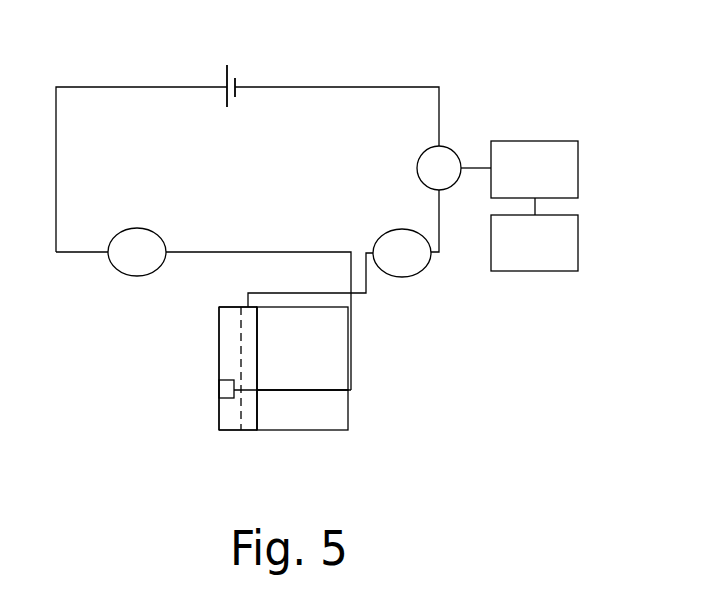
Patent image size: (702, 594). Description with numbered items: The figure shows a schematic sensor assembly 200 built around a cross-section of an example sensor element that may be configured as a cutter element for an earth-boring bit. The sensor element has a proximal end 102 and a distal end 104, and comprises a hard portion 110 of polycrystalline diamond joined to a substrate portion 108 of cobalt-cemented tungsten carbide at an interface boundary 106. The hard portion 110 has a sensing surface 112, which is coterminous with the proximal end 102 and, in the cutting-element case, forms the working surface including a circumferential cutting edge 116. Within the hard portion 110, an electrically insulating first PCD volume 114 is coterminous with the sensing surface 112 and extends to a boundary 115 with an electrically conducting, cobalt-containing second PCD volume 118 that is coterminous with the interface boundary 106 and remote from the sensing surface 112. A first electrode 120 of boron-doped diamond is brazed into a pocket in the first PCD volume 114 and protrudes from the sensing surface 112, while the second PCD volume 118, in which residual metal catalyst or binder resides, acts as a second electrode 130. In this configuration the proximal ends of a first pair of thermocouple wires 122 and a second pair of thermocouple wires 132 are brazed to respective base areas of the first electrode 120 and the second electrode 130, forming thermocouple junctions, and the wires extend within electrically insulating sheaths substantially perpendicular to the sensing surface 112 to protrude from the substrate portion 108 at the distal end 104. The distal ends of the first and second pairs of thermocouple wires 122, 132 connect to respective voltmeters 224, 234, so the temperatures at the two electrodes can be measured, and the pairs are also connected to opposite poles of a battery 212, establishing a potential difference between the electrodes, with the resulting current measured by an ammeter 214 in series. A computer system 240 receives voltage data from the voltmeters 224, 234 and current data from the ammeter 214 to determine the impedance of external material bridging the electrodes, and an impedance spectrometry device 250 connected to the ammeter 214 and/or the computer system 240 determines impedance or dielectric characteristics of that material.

The sensor assembly 200 is at (484, 83).
The battery 212 is at (222, 100).
The ammeter 214 is at (447, 150).
The computer system 240 is at (534, 178).
The impedance spectrometry device 250 is at (534, 243).
The voltmeter 224 is at (110, 271).
The voltmeter 234 is at (426, 268).
The first pair of thermocouple wires 122 is at (290, 252).
The second pair of thermocouple wires 132 is at (367, 276).
The distal end 104 is at (362, 368).
The interface boundary 106 is at (258, 320).
The substrate portion 108 is at (323, 416).
The proximal end 102 is at (198, 407).
The boundary 115 is at (241, 307).
The circumferential cutting edge 116 is at (217, 305).
The first electrode 120 is at (218, 333).
The sensing surface 112 is at (218, 358).
The second electrode 130 is at (218, 388).
The first PCD volume 114 is at (226, 413).
The hard portion 110 is at (229, 437).
The second PCD volume 118 is at (249, 421).